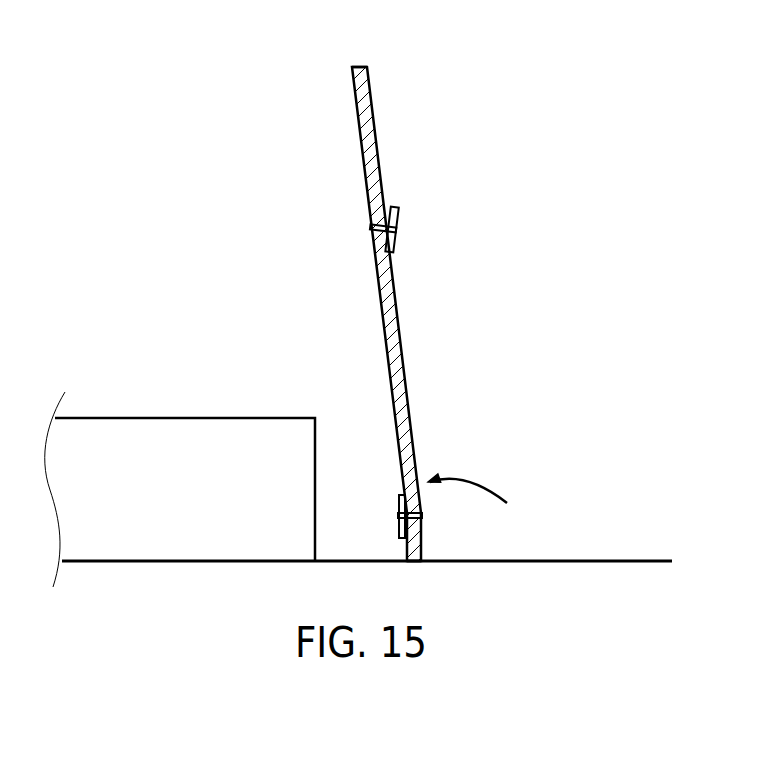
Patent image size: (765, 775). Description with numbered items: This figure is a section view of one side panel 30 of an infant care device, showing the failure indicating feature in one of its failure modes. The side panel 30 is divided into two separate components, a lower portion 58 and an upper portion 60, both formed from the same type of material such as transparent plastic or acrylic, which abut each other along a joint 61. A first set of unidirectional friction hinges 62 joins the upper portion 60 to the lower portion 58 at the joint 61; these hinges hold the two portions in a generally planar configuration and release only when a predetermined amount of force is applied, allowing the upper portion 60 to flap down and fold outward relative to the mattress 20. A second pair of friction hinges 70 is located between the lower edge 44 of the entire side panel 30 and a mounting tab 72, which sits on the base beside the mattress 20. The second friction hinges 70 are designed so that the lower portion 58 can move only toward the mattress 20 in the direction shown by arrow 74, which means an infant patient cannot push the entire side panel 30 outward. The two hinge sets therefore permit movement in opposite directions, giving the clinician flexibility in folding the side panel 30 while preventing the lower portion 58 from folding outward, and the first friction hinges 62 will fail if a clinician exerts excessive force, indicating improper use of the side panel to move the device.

The mattress 20 is at (150, 432).
The side panel 30 is at (382, 350).
The lower edge 44 is at (423, 517).
The lower portion 58 is at (381, 310).
The upper portion 60 is at (357, 108).
The joint 61 is at (370, 229).
The friction hinges 62 is at (397, 213).
The second pair of friction hinges 70 is at (398, 502).
The mounting tab 72 is at (424, 545).
The arrow 74 is at (478, 478).